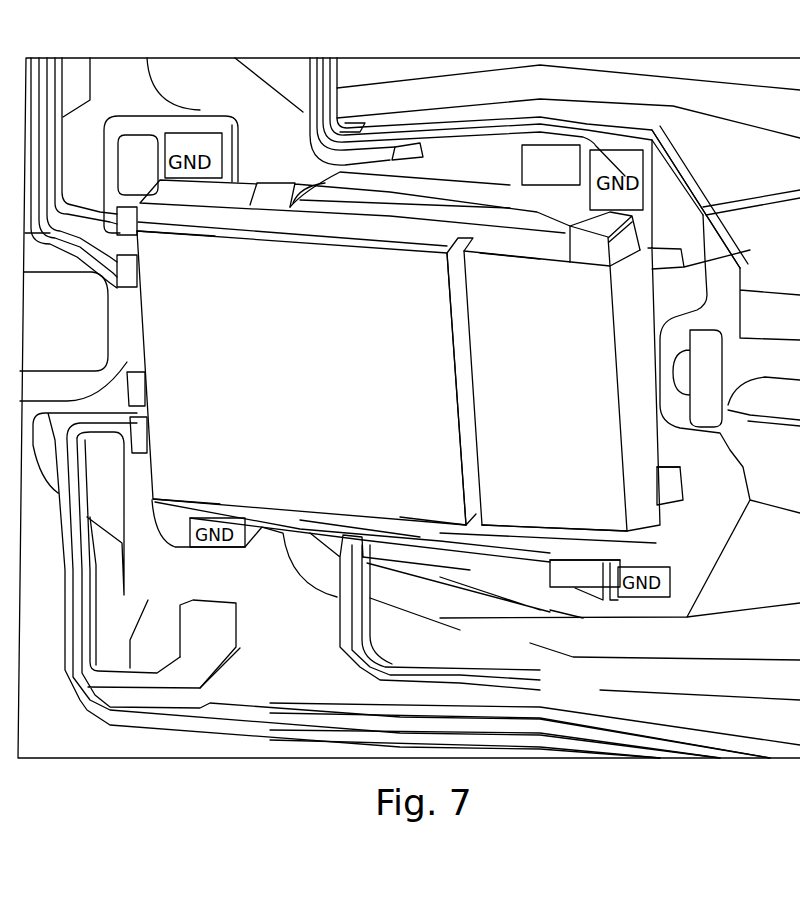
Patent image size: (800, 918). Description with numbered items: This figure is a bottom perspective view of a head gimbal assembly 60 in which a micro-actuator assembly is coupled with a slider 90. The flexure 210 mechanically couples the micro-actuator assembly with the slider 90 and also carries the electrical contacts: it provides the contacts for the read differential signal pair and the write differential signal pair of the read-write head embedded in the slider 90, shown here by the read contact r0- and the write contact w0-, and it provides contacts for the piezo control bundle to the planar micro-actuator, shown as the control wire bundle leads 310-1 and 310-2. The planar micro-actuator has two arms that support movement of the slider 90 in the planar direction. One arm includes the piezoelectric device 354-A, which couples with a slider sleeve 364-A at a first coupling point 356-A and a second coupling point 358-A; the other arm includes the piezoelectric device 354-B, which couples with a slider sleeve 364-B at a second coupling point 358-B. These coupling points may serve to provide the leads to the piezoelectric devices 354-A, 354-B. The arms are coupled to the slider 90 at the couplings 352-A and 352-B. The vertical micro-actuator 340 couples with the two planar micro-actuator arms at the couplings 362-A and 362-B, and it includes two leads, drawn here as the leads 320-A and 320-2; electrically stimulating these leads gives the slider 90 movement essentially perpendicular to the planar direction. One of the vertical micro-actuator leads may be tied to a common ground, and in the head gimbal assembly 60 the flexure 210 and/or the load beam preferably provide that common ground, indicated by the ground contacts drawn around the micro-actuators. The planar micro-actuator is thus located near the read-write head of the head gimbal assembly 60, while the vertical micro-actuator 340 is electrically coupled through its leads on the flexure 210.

The flexure 210 is at (62, 72).
The head gimbal assembly 60 is at (200, 112).
The first coupling point 356-A is at (293, 167).
The piezoelectric device 354-A is at (438, 168).
The control wire bundle lead 310-1 is at (563, 183).
The vertical micro-actuator lead 320-A is at (750, 237).
The read negative contact r0- is at (134, 278).
The write negative contact w0- is at (143, 438).
The slider 90 is at (301, 378).
The vertical micro-actuator 340 is at (552, 390).
The slider sleeve 364-A is at (373, 250).
The second coupling point 358-A is at (572, 240).
The coupling 362-A is at (512, 250).
The coupling 352-A is at (213, 232).
The coupling 352-B is at (173, 500).
The piezoelectric device 354-B is at (363, 542).
The slider sleeve 364-B is at (427, 523).
The second coupling point 358-B is at (553, 527).
The coupling 362-B is at (600, 560).
The vertical micro-actuator lead 320-2 is at (683, 498).
The control wire bundle lead 310-2 is at (575, 590).